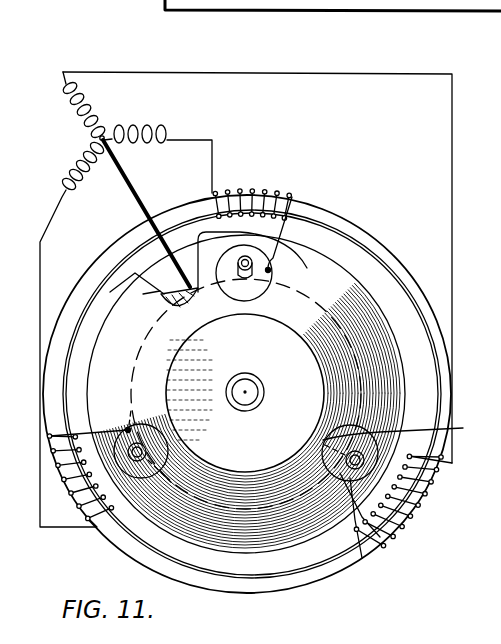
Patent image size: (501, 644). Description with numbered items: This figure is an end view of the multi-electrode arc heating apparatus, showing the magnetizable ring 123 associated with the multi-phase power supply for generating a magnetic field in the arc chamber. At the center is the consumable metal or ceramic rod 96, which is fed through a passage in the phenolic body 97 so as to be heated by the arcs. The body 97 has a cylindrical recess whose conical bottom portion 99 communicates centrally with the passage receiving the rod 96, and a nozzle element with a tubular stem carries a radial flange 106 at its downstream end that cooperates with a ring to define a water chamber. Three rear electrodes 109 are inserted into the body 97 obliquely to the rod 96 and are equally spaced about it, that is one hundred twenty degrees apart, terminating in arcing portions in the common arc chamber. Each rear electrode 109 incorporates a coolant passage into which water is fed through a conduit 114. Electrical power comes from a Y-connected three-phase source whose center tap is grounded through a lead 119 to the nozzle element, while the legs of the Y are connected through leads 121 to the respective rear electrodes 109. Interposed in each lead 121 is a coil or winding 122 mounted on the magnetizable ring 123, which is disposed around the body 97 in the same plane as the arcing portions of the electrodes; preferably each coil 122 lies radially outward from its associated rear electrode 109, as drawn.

The consumable rod 96 is at (255, 398).
The phenolic body 97 is at (308, 252).
The conical bottom portion 99 is at (277, 267).
The radial flange 106 is at (146, 295).
The rear electrodes 109 is at (248, 287).
The conduit 114 is at (411, 430).
The lead 119 is at (172, 180).
The leads 121 is at (280, 72).
The coil or winding 122 is at (407, 515).
The magnetizable ring 123 is at (390, 265).